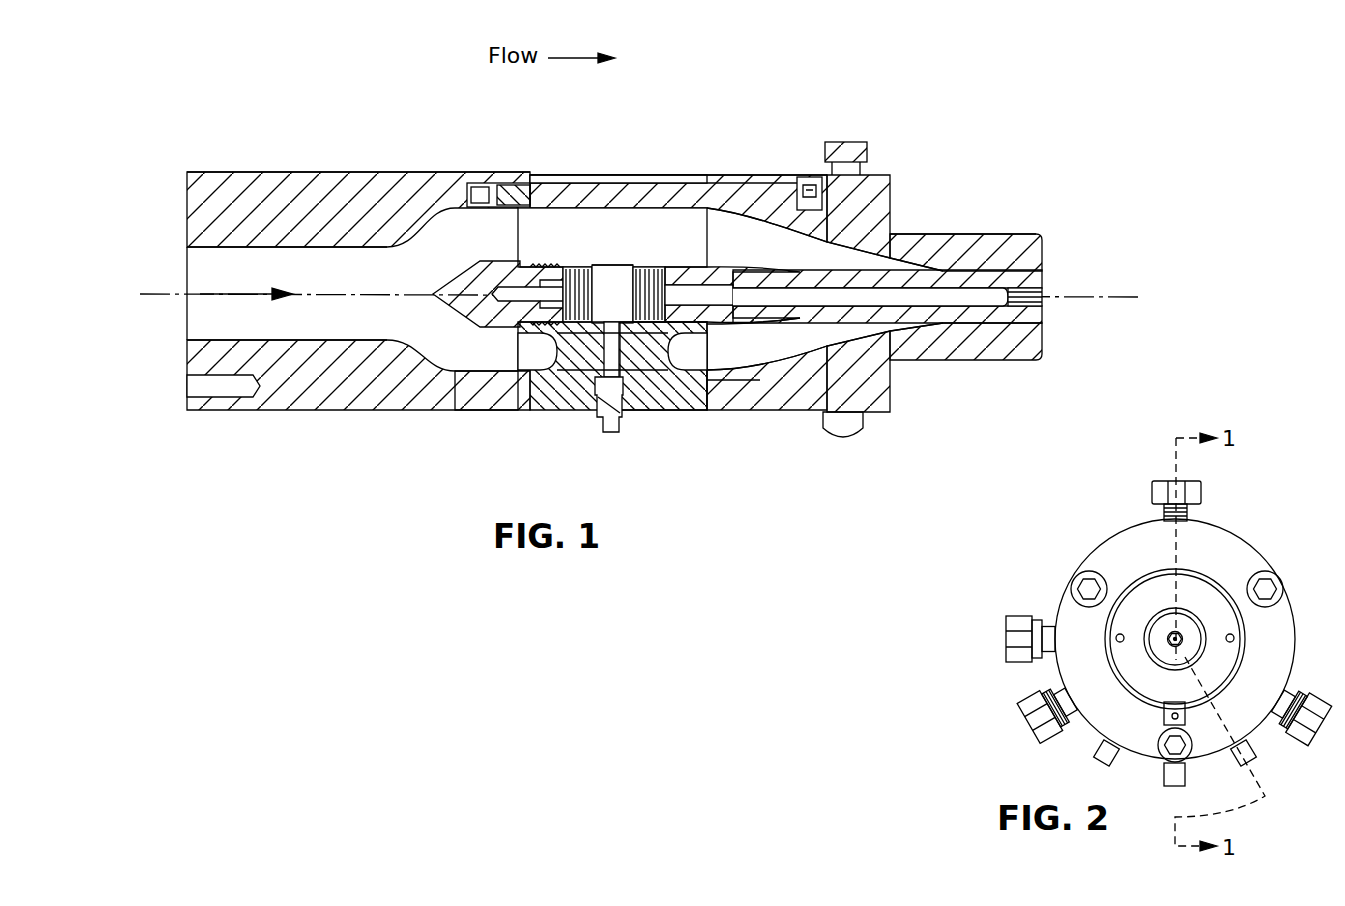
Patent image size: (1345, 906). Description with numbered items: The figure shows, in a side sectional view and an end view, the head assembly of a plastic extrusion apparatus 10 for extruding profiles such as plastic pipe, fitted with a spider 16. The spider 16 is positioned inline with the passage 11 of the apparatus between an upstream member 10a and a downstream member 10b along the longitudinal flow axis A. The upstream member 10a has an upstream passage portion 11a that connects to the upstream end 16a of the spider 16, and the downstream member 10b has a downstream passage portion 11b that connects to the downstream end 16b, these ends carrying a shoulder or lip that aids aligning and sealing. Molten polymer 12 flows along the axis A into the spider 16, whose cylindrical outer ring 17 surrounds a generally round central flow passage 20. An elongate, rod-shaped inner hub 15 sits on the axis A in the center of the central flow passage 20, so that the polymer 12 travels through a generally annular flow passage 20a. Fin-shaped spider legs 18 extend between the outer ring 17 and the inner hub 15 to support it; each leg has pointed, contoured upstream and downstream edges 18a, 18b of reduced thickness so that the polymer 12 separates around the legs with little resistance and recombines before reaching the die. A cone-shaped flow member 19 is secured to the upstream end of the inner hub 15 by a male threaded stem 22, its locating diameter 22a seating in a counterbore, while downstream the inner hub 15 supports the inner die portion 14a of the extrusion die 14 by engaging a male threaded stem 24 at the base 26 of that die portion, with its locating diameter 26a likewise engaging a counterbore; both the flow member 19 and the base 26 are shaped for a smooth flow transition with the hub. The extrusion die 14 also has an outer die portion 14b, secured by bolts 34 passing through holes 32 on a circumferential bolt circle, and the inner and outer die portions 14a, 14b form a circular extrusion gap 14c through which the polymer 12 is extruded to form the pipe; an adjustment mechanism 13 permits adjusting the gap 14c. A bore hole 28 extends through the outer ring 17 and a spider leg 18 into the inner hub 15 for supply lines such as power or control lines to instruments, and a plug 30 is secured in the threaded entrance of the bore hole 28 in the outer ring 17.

In FIG. 1, the plastic extrusion apparatus 10 is at (806, 117).
In FIG. 2, the plastic extrusion apparatus 10 is at (1285, 495).
In FIG. 1, the upstream member 10a is at (320, 171).
In FIG. 1, the downstream member 10b is at (796, 173).
In FIG. 2, the downstream member 10b is at (1254, 544).
In FIG. 1, the passage 11 is at (305, 338).
In FIG. 1, the upstream passage portion 11a is at (226, 338).
In FIG. 1, the downstream passage portion 11b is at (812, 355).
In FIG. 1, the molten polymer 12 is at (253, 290).
In FIG. 1, the adjustment mechanism 13 is at (884, 137).
In FIG. 1, the extrusion die 14 is at (1018, 233).
In FIG. 2, the extrusion die 14 is at (1268, 655).
In FIG. 1, the inner die portion 14a is at (1043, 283).
In FIG. 2, the inner die portion 14a is at (1193, 636).
In FIG. 1, the outer die portion 14b is at (982, 233).
In FIG. 2, the outer die portion 14b is at (1195, 590).
In FIG. 1, the extrusion gap 14c is at (1043, 273).
In FIG. 2, the extrusion gap 14c is at (1160, 611).
In FIG. 1, the inner hub 15 is at (615, 265).
In FIG. 1, the spider 16 is at (560, 409).
In FIG. 1, the upstream end 16a is at (470, 392).
In FIG. 1, the downstream end 16b is at (738, 378).
In FIG. 1, the outer ring 17 is at (680, 403).
In FIG. 1, the spider legs 18 is at (640, 400).
In FIG. 1, the upstream edge 18a is at (518, 346).
In FIG. 1, the downstream edge 18b is at (707, 345).
In FIG. 1, the flow member 19 is at (447, 285).
In FIG. 1, the central flow passage 20 is at (532, 230).
In FIG. 1, the annular flow passage 20a is at (466, 182).
In FIG. 1, the male threaded stem 22 is at (560, 265).
In FIG. 1, the locating diameter 22a is at (560, 265).
In FIG. 1, the male threaded stem 24 is at (683, 265).
In FIG. 1, the base 26 is at (804, 289).
In FIG. 1, the locating diameter 26a is at (713, 262).
In FIG. 1, the bore holes 28 is at (603, 385).
In FIG. 1, the plug 30 is at (612, 435).
In FIG. 2, the plug 30 is at (1254, 751).
In FIG. 1, the holes 32 is at (590, 174).
In FIG. 1, the bolts 34 is at (640, 174).
In FIG. 1, the longitudinal flow axis A is at (1058, 300).
In FIG. 2, the longitudinal flow axis A is at (1168, 650).